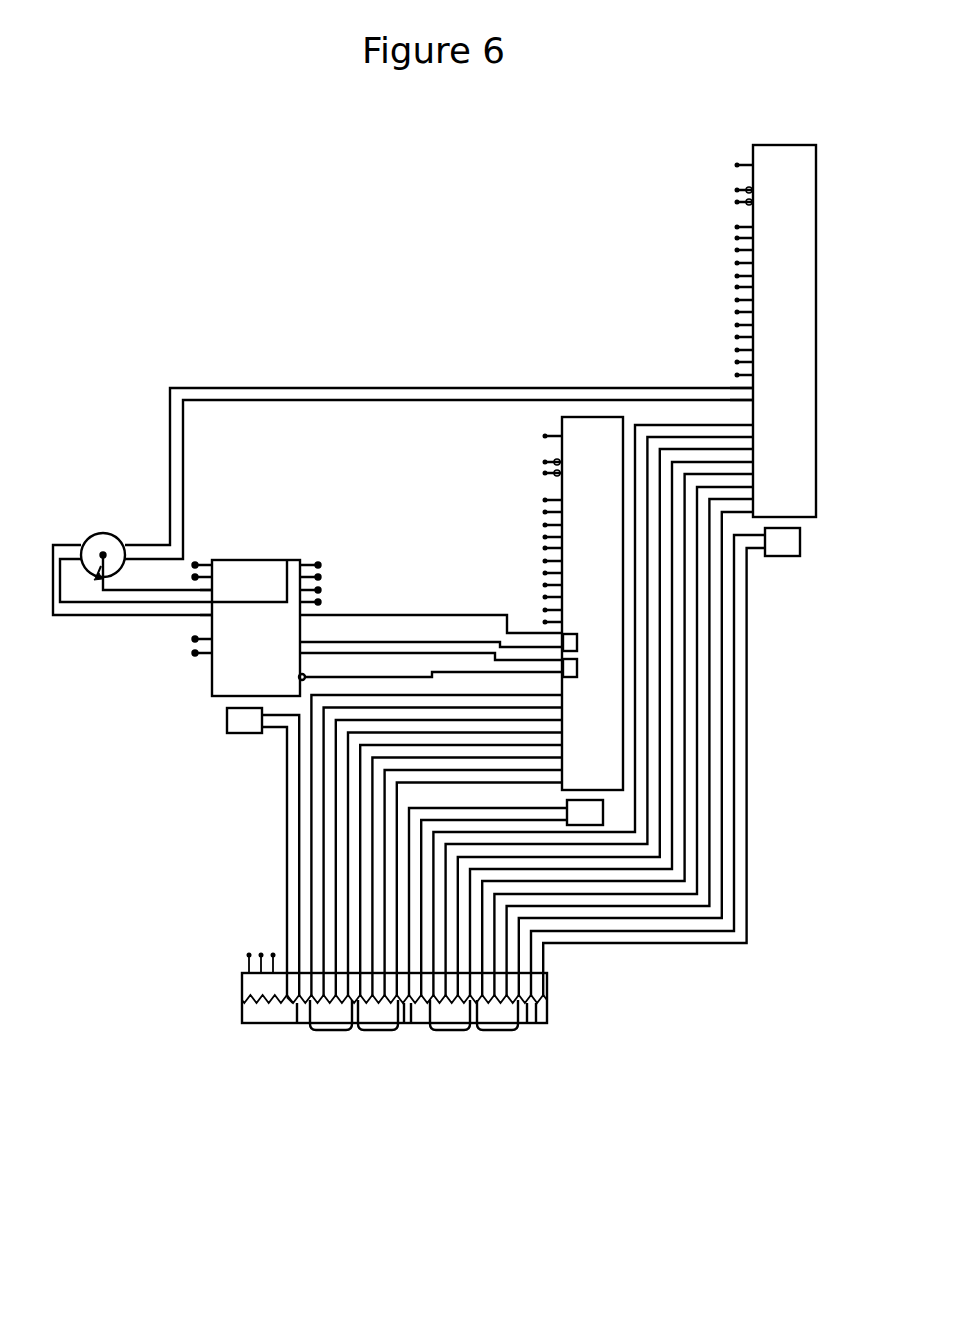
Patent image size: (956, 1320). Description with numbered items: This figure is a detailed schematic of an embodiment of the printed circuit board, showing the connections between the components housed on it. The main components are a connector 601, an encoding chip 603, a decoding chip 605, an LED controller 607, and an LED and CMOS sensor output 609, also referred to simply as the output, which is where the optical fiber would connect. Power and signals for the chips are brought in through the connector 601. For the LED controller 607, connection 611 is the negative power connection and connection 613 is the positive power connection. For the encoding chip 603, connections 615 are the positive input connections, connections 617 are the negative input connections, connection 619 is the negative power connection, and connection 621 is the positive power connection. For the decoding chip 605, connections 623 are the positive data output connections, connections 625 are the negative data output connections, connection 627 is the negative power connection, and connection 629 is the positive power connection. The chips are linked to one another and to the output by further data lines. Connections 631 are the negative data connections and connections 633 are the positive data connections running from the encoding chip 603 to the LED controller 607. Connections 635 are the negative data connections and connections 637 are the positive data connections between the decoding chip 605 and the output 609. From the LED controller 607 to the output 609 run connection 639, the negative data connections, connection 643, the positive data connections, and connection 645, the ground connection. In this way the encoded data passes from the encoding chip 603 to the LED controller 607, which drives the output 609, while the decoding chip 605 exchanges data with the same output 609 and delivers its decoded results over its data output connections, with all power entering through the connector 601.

The connector 601 is at (242, 1000).
The encoding chip 603 is at (583, 603).
The decoding chip 605 is at (776, 331).
The LED controller 607 is at (257, 628).
The LED and CMOS sensor output 609 is at (115, 572).
The negative power connection 611 is at (290, 1000).
The positive power connection 613 is at (297, 1023).
The positive input connections 615 is at (329, 1030).
The negative input connections 617 is at (377, 1030).
The negative power connection 619 is at (404, 1023).
The positive power connection 621 is at (419, 1000).
The positive data output connections 623 is at (449, 1030).
The negative data output connections 625 is at (497, 1030).
The negative power connection 627 is at (527, 1023).
The positive power connection 629 is at (542, 1023).
The negative data connections 631 is at (578, 669).
The positive data connections 633 is at (578, 644).
The negative data connections 635 is at (758, 400).
The positive data connections 637 is at (758, 389).
The negative data connections 639 is at (213, 617).
The positive data connections 643 is at (213, 593).
The ground connection 645 is at (287, 561).